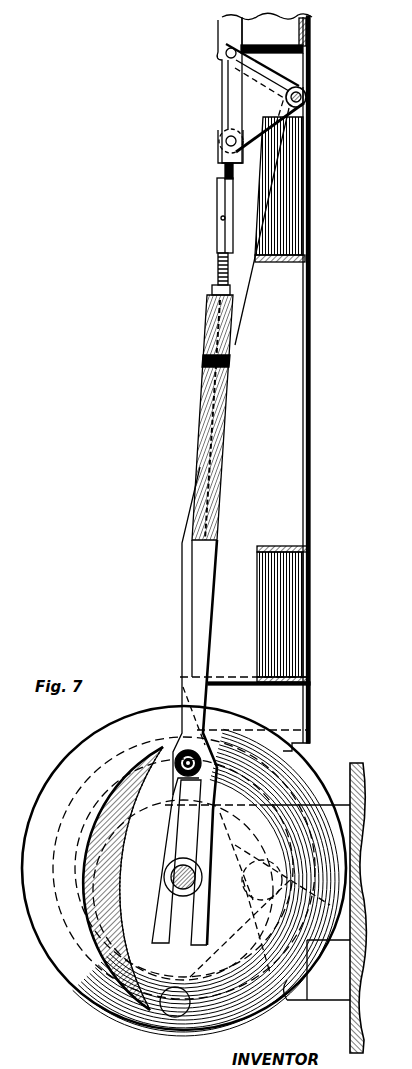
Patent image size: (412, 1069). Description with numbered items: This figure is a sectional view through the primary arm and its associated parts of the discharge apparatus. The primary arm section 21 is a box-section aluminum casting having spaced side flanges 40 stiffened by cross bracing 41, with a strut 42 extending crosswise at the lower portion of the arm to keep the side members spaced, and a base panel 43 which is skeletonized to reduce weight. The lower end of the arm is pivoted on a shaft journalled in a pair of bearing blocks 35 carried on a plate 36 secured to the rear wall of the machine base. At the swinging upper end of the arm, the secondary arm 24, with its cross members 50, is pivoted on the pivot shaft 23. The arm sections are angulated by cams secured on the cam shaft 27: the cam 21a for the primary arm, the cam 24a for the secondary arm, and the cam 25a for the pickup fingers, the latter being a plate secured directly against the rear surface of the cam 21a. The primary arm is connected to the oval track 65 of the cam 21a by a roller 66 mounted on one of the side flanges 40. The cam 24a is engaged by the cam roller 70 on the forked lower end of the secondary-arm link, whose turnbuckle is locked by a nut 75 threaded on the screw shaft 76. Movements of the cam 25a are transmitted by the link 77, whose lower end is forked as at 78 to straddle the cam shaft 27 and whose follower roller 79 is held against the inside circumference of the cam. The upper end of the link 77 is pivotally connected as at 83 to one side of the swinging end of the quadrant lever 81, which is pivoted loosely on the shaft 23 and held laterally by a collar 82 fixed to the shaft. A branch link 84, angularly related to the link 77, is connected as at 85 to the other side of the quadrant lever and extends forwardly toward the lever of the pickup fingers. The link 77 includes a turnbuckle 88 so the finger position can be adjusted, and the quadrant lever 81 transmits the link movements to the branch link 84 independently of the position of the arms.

The primary arm section 21 is at (182, 566).
The cam for the primary arm 21a is at (126, 776).
The pivot shaft of the secondary arm 23 is at (306, 100).
The secondary arm 24 is at (308, 33).
The cam for the secondary arm 24a is at (140, 967).
The cam for the pickup fingers 25a is at (95, 823).
The cam shaft 27 is at (175, 882).
The bearing block 35 is at (331, 990).
The plate 36 is at (350, 780).
The side flange 40 is at (283, 380).
The cross bracing 41 is at (272, 262).
The strut 42 is at (248, 684).
The base panel 43 is at (310, 436).
The cross member 50 is at (276, 45).
The oval track 65 is at (56, 940).
The roller 66 is at (258, 872).
The cam roller 70 is at (188, 1020).
The nut 75 is at (212, 290).
The screw shaft 76 is at (218, 268).
The link 77 is at (206, 482).
The fork 78 is at (213, 794).
The follower roller 79 is at (176, 758).
The quadrant lever 81 is at (230, 113).
The collar 82 is at (304, 93).
The pivotal connection 83 is at (221, 143).
The branch link 84 is at (230, 28).
The pivotal connection 85 is at (222, 56).
The turnbuckle 88 is at (222, 216).